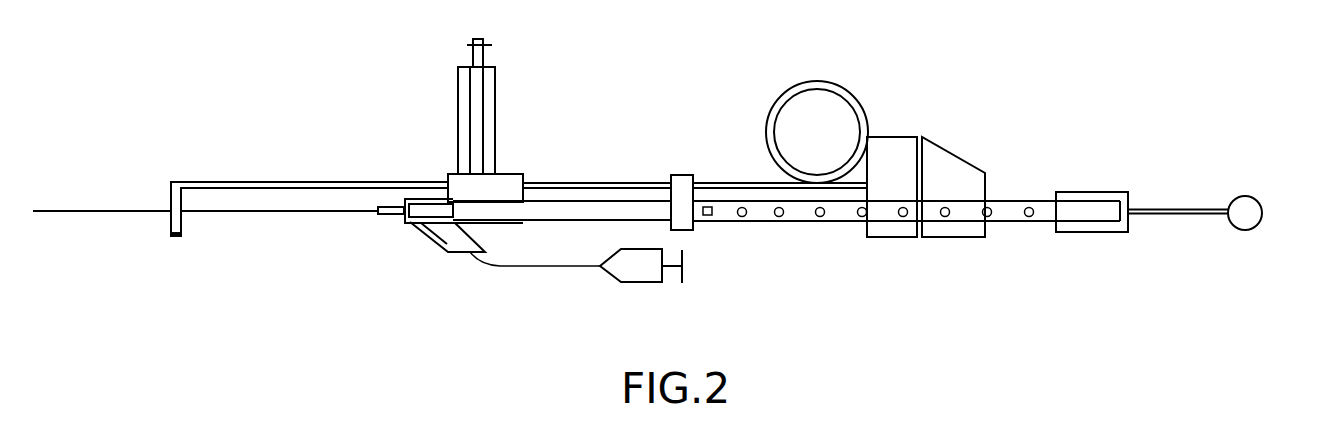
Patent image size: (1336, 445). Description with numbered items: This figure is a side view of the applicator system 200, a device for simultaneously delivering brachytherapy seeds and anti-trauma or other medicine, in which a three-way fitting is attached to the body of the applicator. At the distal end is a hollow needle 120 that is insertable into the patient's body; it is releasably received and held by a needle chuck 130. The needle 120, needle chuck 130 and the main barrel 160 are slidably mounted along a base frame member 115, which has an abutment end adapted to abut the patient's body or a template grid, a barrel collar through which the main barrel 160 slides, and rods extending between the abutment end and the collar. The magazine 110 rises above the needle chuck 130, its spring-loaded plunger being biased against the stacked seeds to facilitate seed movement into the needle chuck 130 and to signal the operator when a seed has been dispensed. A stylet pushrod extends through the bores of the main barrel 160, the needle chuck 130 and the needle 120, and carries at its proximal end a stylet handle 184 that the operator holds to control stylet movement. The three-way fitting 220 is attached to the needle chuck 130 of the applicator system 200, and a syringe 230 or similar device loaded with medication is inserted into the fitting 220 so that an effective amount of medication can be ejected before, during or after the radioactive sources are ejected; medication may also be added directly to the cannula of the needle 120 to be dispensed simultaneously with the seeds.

The applicator system 200 is at (1008, 66).
The hollow needle 120 is at (80, 212).
The base frame member 115 is at (224, 181).
The magazine 110 is at (495, 108).
The needle chuck 130 is at (512, 173).
The three-way fitting 220 is at (423, 244).
The syringe 230 is at (638, 283).
The main barrel 160 is at (760, 222).
The stylet handle 184 is at (1257, 194).